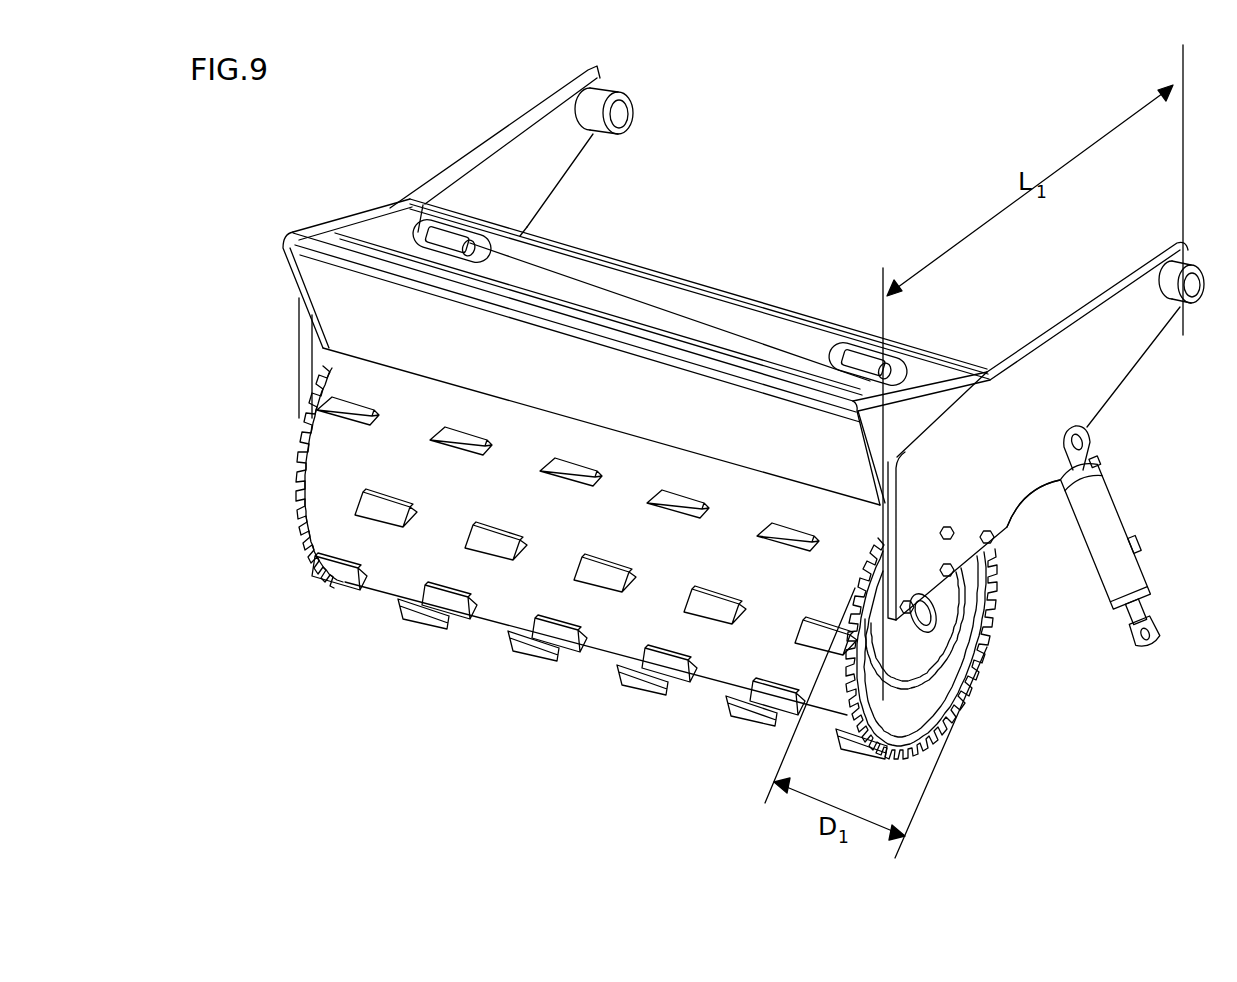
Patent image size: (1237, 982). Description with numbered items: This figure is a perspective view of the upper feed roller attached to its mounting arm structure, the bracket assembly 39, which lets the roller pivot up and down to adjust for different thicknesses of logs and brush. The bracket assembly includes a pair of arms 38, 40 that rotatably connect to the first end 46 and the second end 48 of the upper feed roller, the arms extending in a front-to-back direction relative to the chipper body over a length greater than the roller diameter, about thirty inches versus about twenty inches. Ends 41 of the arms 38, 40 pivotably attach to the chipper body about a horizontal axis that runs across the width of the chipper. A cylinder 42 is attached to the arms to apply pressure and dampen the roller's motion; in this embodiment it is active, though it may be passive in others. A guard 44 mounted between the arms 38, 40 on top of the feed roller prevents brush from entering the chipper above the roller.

The arm 38 is at (1083, 337).
The bracket assembly 39 is at (1036, 644).
The arm 40 is at (547, 175).
The ends of the arms 41 is at (629, 108).
The cylinder 42 is at (1125, 518).
The guard 44 is at (947, 357).
The first end 46 is at (293, 492).
The second end 48 is at (895, 762).